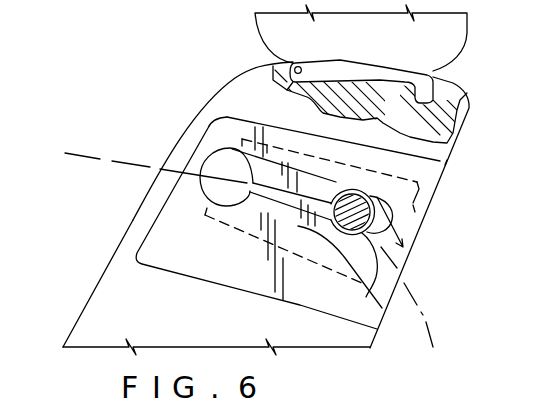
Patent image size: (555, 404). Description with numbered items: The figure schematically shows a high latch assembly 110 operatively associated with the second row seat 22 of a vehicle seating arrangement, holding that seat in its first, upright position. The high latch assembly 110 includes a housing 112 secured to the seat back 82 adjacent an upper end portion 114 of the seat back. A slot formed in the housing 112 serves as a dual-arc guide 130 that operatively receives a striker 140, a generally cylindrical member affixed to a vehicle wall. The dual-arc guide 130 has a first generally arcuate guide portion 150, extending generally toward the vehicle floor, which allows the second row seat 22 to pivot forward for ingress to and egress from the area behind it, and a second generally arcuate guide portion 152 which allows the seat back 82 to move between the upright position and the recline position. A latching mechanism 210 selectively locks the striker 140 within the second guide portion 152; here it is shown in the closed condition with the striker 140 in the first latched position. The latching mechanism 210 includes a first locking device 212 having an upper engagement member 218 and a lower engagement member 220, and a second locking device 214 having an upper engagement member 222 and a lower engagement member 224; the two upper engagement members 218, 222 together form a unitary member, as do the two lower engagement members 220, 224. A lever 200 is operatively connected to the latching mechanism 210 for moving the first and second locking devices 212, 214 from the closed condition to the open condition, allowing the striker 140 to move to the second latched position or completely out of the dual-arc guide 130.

The second row seat 22 is at (92, 100).
The seat back 82 is at (97, 297).
The high latch assembly 110 is at (462, 271).
The housing 112 is at (440, 177).
The upper end portion 114 is at (236, 90).
The dual-arc guide 130 is at (320, 294).
The striker 140 is at (357, 190).
The first guide portion 150 is at (382, 235).
The second guide portion 152 is at (207, 190).
The lever 200 is at (350, 65).
The latching mechanism 210 is at (217, 258).
The first locking device 212 is at (358, 264).
The second locking device 214 is at (252, 203).
The upper engagement member 218 is at (406, 238).
The lower engagement member 220 is at (362, 240).
The upper engagement member 222 is at (310, 196).
The lower engagement member 224 is at (247, 187).